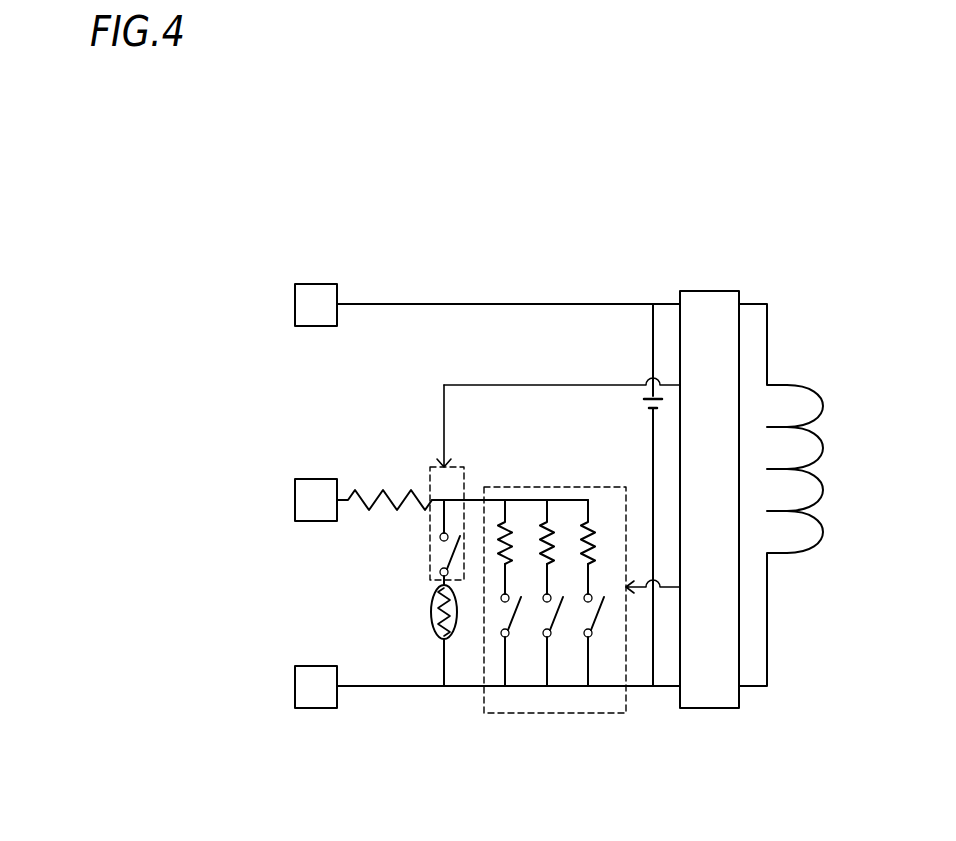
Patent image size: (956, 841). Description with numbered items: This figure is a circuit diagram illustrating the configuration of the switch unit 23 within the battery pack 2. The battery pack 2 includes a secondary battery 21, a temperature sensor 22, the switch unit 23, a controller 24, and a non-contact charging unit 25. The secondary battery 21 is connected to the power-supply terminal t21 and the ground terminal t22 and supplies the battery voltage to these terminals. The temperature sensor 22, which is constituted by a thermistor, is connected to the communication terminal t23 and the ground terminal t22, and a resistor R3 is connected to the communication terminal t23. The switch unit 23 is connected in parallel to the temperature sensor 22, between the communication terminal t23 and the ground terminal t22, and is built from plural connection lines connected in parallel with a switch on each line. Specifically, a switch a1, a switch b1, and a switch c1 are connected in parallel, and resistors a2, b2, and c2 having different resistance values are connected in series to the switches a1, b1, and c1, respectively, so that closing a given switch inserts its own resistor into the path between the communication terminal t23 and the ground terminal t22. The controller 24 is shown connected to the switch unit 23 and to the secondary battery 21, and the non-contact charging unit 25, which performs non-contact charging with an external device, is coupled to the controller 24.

The battery pack 2 is at (673, 190).
The power-supply terminal t21 is at (338, 292).
The ground terminal t22 is at (338, 666).
The communication terminal t23 is at (338, 478).
The secondary battery 21 is at (633, 400).
The temperature sensor 22 is at (433, 623).
The switch unit 23 is at (585, 596).
The controller 24 is at (713, 310).
The non-contact charging unit 25 is at (787, 330).
The switch a1 is at (521, 620).
The switch b1 is at (563, 620).
The switch c1 is at (605, 620).
The resistor a2 is at (506, 526).
The resistor b2 is at (548, 524).
The resistor c2 is at (590, 522).
The resistor R3 is at (384, 483).